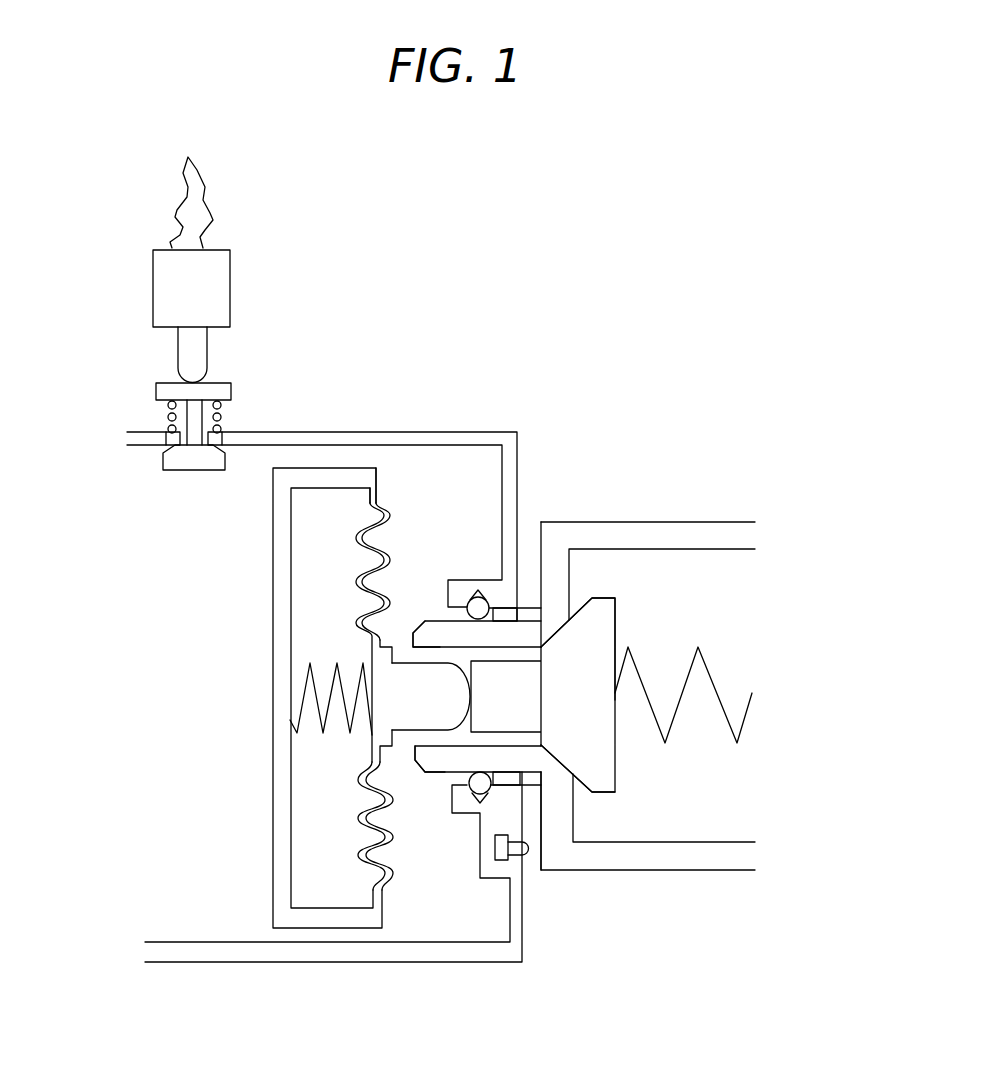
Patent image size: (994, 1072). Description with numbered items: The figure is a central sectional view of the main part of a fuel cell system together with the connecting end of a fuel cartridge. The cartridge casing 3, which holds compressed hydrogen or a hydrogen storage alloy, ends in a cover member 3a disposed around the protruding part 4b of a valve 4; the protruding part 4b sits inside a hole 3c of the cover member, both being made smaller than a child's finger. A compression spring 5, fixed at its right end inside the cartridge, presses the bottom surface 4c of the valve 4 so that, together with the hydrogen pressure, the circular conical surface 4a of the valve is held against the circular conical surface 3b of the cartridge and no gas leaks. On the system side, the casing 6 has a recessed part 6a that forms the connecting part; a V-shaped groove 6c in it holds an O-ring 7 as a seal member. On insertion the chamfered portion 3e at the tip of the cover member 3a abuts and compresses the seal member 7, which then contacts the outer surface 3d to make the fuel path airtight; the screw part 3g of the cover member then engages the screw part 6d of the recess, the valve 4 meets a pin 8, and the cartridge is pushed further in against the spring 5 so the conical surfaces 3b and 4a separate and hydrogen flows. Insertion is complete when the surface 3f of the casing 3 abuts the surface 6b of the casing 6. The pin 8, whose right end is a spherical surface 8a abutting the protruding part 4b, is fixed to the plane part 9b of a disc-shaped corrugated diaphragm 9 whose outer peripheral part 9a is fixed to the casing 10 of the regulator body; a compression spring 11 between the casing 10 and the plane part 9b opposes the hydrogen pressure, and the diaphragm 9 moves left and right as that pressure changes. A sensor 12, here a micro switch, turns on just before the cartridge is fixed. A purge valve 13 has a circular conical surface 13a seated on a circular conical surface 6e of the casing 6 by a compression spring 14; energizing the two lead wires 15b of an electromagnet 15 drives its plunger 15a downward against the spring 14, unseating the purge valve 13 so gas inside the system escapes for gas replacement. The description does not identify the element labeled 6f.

The cartridge casing 3 is at (700, 532).
The cover member 3a is at (432, 778).
The circular conical surface 3b is at (545, 752).
The hole 3c is at (428, 648).
The outer surface 3d is at (442, 620).
The chamfered portion 3e is at (440, 757).
The surface 3f is at (540, 848).
The screw part 3g is at (542, 612).
The valve 4 is at (590, 748).
The circular conical surface 4a is at (580, 790).
The protruding part 4b is at (452, 785).
The bottom surface 4c is at (615, 624).
The compression spring 5 is at (752, 700).
The casing 6 is at (441, 437).
The recessed part 6a is at (470, 800).
The surface 6b is at (492, 793).
The V-shaped groove 6c is at (476, 600).
The screw part 6d is at (519, 612).
The circular conical surface 6e is at (222, 433).
The left spring seat 6f is at (170, 431).
The O-ring 7 is at (465, 815).
The pin 8 is at (457, 668).
The spherical surface 8a is at (437, 707).
The diaphragm 9 is at (360, 578).
The outer peripheral part 9a is at (363, 482).
The plane part 9b is at (372, 650).
The casing 10 is at (297, 479).
The compression spring 11 is at (290, 719).
The sensor 12 is at (500, 860).
The purge valve 13 is at (180, 461).
The circular conical surface 13a is at (172, 444).
The compression spring 14 is at (168, 413).
The electromagnet 15 is at (218, 289).
The plunger 15a is at (185, 350).
The lead wires 15b is at (188, 158).